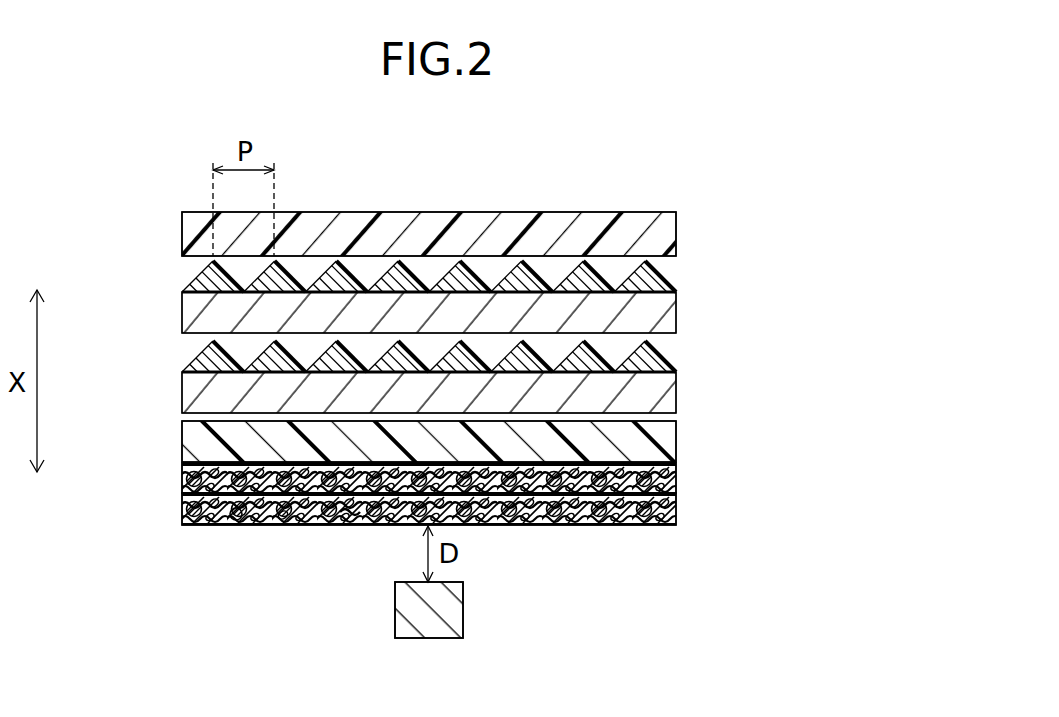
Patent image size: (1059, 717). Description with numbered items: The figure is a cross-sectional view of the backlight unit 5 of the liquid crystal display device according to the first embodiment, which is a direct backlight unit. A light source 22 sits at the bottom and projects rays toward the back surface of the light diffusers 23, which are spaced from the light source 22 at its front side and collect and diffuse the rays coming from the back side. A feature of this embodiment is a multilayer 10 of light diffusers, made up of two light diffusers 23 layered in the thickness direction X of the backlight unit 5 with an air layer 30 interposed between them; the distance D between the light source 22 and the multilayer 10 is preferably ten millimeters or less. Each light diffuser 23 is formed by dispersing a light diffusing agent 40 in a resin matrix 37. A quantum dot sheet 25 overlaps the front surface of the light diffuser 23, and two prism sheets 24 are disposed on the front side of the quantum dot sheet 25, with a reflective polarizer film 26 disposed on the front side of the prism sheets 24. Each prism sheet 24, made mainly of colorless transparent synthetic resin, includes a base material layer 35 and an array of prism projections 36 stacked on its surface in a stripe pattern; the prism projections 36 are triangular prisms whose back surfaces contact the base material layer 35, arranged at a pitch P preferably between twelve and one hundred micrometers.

The backlight unit 5 is at (641, 178).
The reflective polarizer film 26 is at (666, 225).
The prism sheet 24 is at (424, 335).
The prism projection 36 is at (204, 279).
The base material layer 35 is at (192, 313).
The quantum dot sheet 25 is at (668, 438).
The light diffuser 23 is at (676, 471).
The multilayer 10 is at (497, 539).
The air layer 30 is at (235, 526).
The light diffusing agent 40 is at (282, 526).
The resin matrix 37 is at (347, 526).
The light source 22 is at (447, 610).